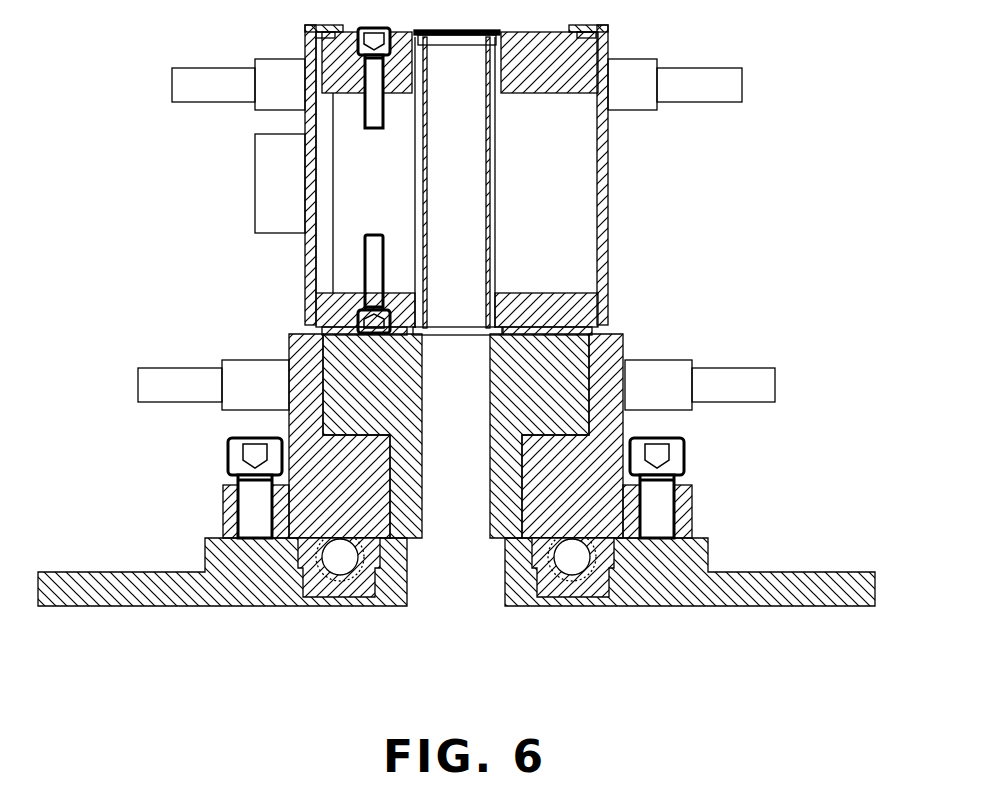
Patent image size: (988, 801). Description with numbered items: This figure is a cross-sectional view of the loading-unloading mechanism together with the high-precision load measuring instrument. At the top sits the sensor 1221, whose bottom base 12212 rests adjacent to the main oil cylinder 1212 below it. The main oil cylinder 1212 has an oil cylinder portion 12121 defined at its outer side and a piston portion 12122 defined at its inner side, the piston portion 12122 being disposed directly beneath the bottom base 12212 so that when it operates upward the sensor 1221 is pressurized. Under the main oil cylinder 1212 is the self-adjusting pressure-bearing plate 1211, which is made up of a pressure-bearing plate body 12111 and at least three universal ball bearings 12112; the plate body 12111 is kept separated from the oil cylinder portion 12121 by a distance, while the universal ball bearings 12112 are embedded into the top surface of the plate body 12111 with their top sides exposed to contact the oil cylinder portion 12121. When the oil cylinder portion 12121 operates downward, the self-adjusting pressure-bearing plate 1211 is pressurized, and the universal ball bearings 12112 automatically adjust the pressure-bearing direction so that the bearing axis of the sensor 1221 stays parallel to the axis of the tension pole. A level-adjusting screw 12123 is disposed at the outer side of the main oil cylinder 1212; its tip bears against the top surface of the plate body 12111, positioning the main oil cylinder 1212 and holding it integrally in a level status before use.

The sensor 1221 is at (350, 260).
The bottom base 12212 is at (328, 308).
The main oil cylinder 1212 is at (122, 317).
The oil cylinder portion 12121 is at (318, 460).
The piston portion 12122 is at (357, 370).
The screw 12123 is at (255, 504).
The self-adjusting pressure-bearing plate 1211 is at (105, 550).
The pressure-bearing plate body 12111 is at (188, 588).
The universal ball bearings 12112 is at (295, 560).